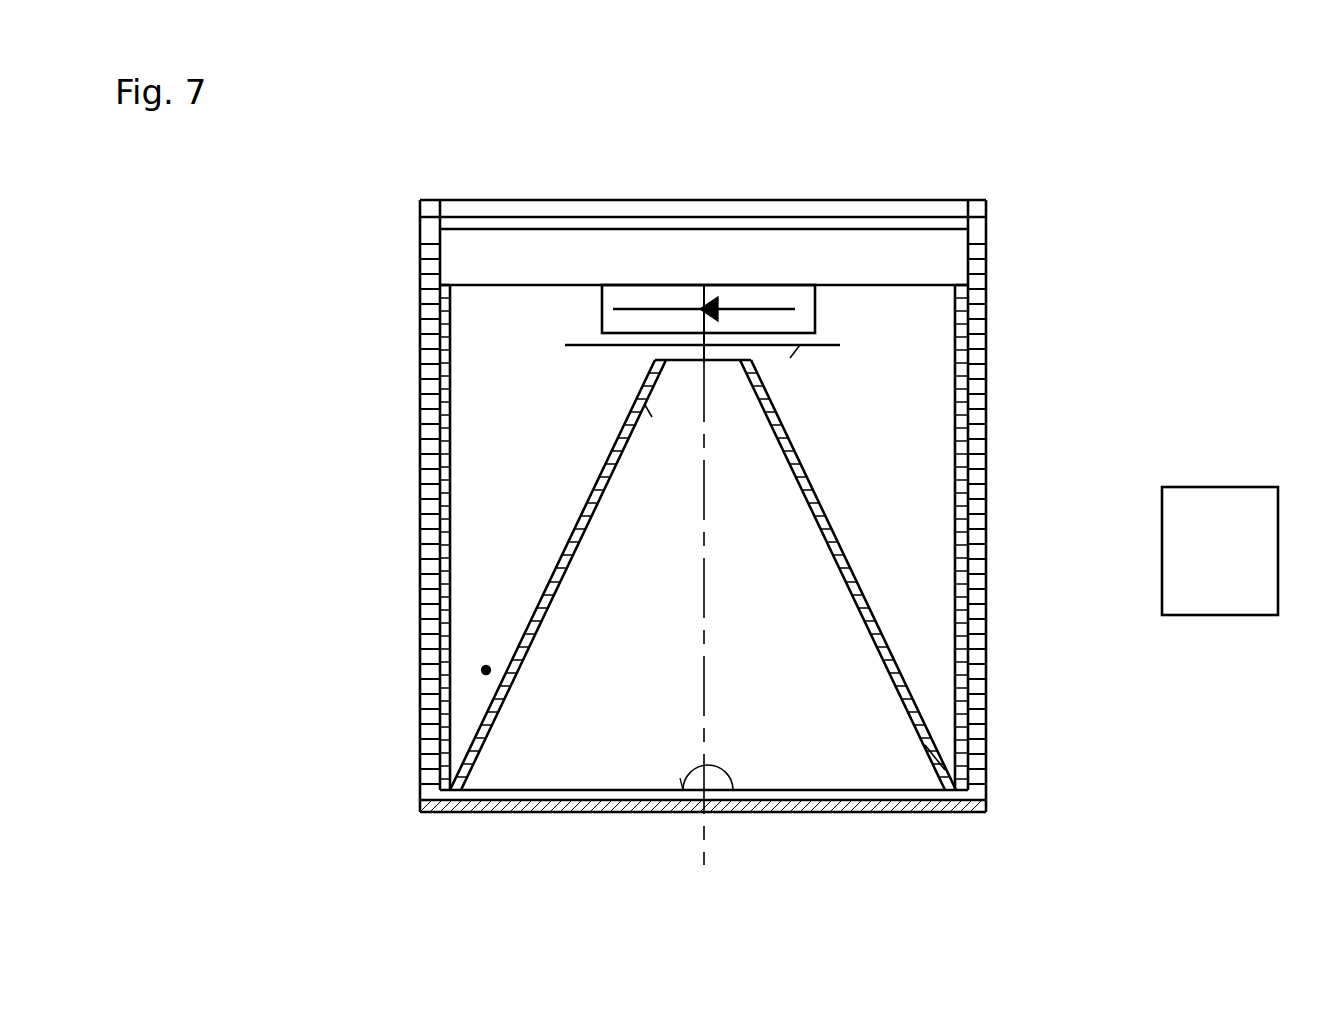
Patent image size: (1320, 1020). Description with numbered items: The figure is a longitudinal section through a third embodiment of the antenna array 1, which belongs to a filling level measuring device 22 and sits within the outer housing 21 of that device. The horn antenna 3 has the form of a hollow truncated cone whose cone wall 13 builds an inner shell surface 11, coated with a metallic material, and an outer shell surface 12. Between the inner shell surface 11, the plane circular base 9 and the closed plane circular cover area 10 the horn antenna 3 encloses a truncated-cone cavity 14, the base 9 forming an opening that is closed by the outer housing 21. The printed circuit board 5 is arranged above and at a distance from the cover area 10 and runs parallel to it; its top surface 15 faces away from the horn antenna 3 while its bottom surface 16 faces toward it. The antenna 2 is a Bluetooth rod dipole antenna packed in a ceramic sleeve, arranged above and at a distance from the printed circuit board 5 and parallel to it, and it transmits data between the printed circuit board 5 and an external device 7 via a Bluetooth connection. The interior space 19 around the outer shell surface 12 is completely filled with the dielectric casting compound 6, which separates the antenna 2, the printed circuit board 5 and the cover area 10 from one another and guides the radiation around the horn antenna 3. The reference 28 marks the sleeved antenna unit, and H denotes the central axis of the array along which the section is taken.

The antenna array 1 is at (822, 276).
The antenna 2 is at (597, 310).
The horn antenna 3 is at (905, 669).
The printed circuit board 5 is at (830, 337).
The casting compound 6 is at (478, 631).
The external device 7 is at (733, 792).
The base 9 is at (588, 804).
The cover area 10 is at (724, 352).
The inner shell surface 11 is at (585, 555).
The outer shell surface 12 is at (600, 442).
The cone wall 13 is at (650, 412).
The cavity 14 is at (852, 736).
The top surface 15 is at (826, 330).
The bottom surface 16 is at (800, 352).
The interior space 19 is at (486, 670).
The outer housing 21 is at (858, 812).
The filling level measuring device 22 is at (337, 694).
The unit housing 28 is at (622, 306).
The axis H is at (705, 637).